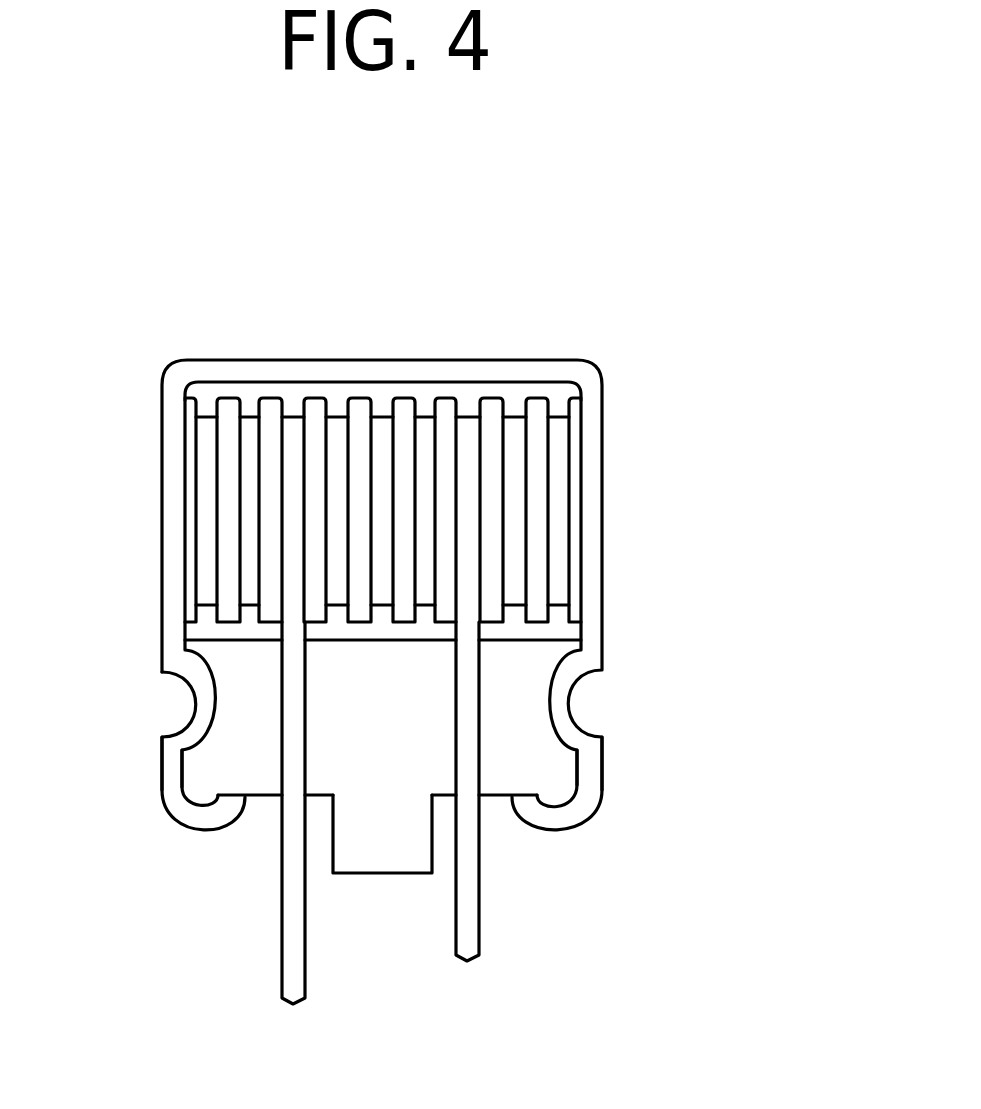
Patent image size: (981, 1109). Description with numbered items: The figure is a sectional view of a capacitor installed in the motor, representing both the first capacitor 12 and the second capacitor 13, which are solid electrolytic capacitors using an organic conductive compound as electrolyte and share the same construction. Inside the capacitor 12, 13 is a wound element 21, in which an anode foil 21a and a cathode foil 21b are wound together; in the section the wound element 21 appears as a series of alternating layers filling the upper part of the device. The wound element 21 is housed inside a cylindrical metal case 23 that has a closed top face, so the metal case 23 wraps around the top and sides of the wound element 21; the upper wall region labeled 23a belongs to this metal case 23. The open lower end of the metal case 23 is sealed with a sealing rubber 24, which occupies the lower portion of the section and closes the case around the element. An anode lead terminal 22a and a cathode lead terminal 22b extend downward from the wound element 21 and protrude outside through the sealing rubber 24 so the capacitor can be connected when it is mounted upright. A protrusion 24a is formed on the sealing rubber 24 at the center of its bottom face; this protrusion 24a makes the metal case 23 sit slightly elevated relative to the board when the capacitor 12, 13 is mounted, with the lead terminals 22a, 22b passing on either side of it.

The first capacitor 12 is at (512, 586).
The second capacitor 13 is at (590, 430).
The wound element 21 is at (303, 428).
The anode foil 21a is at (423, 412).
The cathode foil 21b is at (562, 412).
The anode lead terminal 22a is at (297, 892).
The cathode lead terminal 22b is at (465, 867).
The metal case 23 is at (427, 648).
The bobbin flange 23a is at (278, 373).
The sealing rubber 24 is at (240, 758).
The protrusion 24a is at (372, 853).